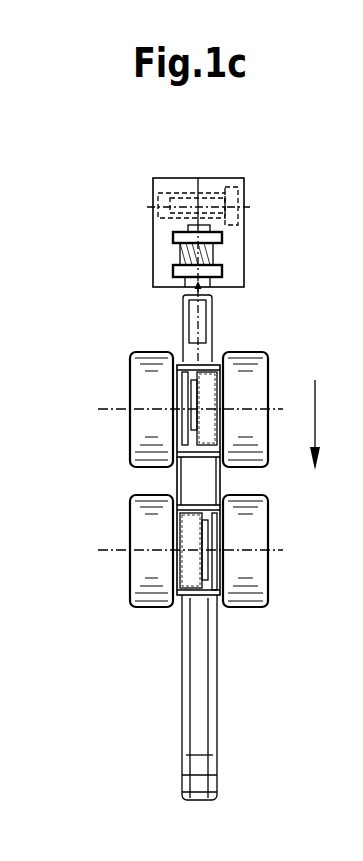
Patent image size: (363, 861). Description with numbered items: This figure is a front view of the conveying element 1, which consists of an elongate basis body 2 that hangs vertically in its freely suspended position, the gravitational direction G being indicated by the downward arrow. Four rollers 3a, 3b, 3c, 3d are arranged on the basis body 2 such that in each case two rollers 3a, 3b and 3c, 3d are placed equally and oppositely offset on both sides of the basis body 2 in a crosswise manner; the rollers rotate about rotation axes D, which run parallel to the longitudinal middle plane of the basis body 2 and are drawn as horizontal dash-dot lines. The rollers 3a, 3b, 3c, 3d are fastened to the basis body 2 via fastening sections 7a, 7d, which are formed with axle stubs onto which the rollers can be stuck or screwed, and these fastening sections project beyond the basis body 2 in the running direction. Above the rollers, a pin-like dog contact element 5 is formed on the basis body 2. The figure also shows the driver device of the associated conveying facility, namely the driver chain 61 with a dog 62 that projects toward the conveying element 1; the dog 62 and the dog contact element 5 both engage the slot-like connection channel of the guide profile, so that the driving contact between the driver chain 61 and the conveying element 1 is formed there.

The conveying element 1 is at (265, 657).
The basis body 2 is at (199, 688).
The roller 3a is at (258, 370).
The roller 3b is at (250, 515).
The roller 3c is at (147, 375).
The roller 3d is at (142, 508).
The dog contact element 5 is at (191, 353).
The fastening section 7a is at (209, 390).
The fastening section 7d is at (185, 597).
The driver chain 61 is at (217, 248).
The dog 62 is at (195, 291).
The rotation axis D is at (115, 409).
The gravitational direction G is at (315, 407).